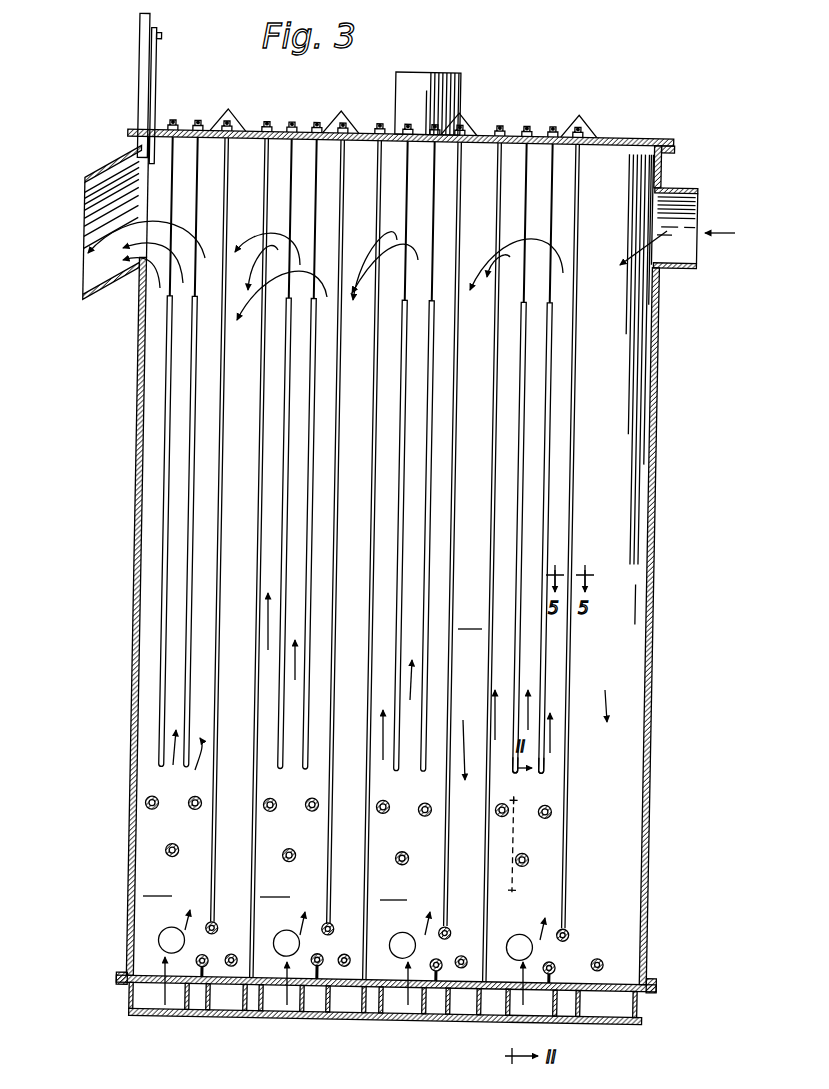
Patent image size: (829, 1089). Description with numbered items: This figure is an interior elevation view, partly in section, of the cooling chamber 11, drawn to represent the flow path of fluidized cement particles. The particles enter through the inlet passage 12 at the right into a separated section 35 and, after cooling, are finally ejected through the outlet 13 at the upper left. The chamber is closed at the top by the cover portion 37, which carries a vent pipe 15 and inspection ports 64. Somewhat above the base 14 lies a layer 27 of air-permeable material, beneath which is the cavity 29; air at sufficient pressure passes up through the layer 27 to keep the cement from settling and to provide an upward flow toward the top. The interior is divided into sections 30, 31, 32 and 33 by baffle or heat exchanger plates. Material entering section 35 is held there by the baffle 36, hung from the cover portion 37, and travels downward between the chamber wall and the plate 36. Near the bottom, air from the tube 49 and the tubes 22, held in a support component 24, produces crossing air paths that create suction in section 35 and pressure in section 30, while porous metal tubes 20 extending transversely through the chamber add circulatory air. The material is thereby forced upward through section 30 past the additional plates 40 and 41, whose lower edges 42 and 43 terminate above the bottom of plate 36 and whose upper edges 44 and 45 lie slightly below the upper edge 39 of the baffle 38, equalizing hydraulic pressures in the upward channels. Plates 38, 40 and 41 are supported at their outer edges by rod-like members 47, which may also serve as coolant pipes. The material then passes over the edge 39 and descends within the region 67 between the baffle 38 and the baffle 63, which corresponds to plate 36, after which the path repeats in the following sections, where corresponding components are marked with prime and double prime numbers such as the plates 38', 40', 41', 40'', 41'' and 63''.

The cooling chamber 11 is at (655, 447).
The inlet passage 12 is at (672, 270).
The outlet 13 is at (88, 176).
The base 14 is at (157, 1016).
The vent pipe 15 is at (398, 100).
The porous metal tubes 20 is at (167, 850).
The tubes 22 is at (562, 930).
The support component 24 is at (205, 957).
The layer of air-permeable material 27 is at (150, 965).
The cavity 29 is at (150, 997).
The section 30 is at (507, 844).
The section 31 is at (393, 889).
The section 32 is at (275, 885).
The section 33 is at (157, 885).
The separated section 35 is at (612, 560).
The baffle or heat exchanger plate 36 is at (576, 432).
The cover portion 37 is at (252, 130).
The baffle or heat exchanger plate 38 is at (476, 562).
The baffle or heat exchanger plate 38' is at (359, 560).
The upper edge 39 is at (513, 292).
The baffle or heat exchanger plate 40 is at (573, 538).
The baffle or heat exchanger plate 41 is at (563, 537).
The baffle or heat exchanger plate 40' is at (388, 536).
The baffle or heat exchanger plate 41' is at (373, 535).
The baffle or heat exchanger plate 40'' is at (269, 534).
The baffle or heat exchanger plate 41'' is at (257, 533).
The lower edge 42 is at (542, 773).
The lower edge 43 is at (516, 774).
The upper edge 44 is at (548, 305).
The upper edge 45 is at (522, 305).
The rod-like members 47 is at (522, 173).
The tube 49 is at (603, 962).
The baffle or heat exchanger plate 63 is at (464, 534).
The baffle or heat exchanger plate 63'' is at (350, 532).
The inspection ports 64 is at (232, 112).
The region 67 is at (470, 618).